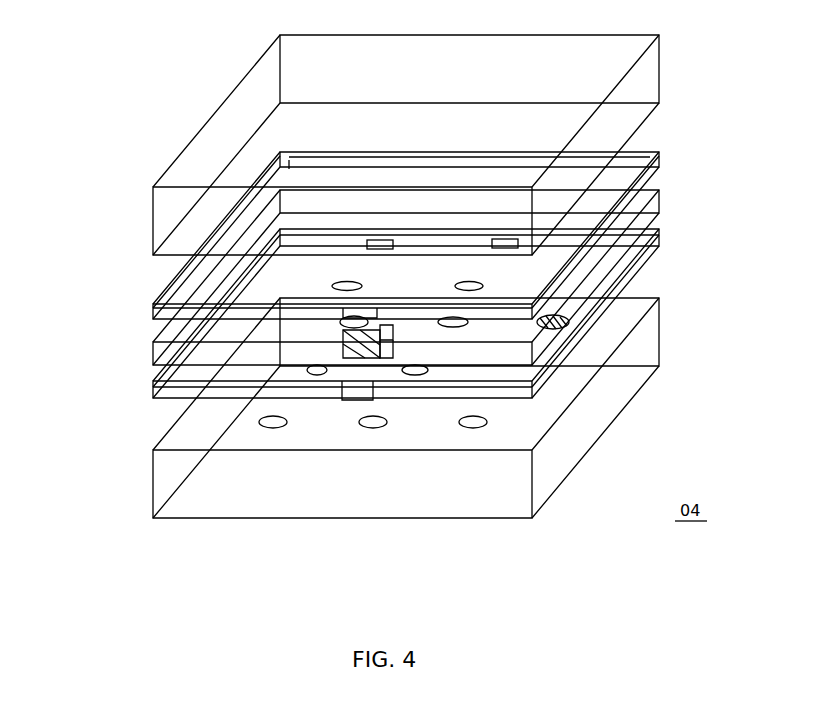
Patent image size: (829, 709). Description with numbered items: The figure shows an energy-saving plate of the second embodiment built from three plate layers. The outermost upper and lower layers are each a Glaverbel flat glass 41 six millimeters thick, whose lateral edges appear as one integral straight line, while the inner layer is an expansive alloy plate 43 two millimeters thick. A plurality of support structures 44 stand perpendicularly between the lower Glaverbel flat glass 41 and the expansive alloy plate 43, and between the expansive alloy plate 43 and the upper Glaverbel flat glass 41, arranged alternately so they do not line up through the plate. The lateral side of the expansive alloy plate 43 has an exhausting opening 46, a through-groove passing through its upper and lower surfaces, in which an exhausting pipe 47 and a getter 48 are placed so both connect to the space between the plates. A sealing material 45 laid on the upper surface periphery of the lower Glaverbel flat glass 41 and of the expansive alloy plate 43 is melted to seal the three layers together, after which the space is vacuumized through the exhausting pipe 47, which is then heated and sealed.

The Glaverbel flat glass 41 is at (160, 198).
The expansive alloy plate 43 is at (160, 352).
The support structures 44 is at (482, 279).
The sealing material 45 is at (160, 304).
The exhausting opening 46 is at (393, 347).
The exhausting pipe 47 is at (380, 358).
The getter 48 is at (383, 332).